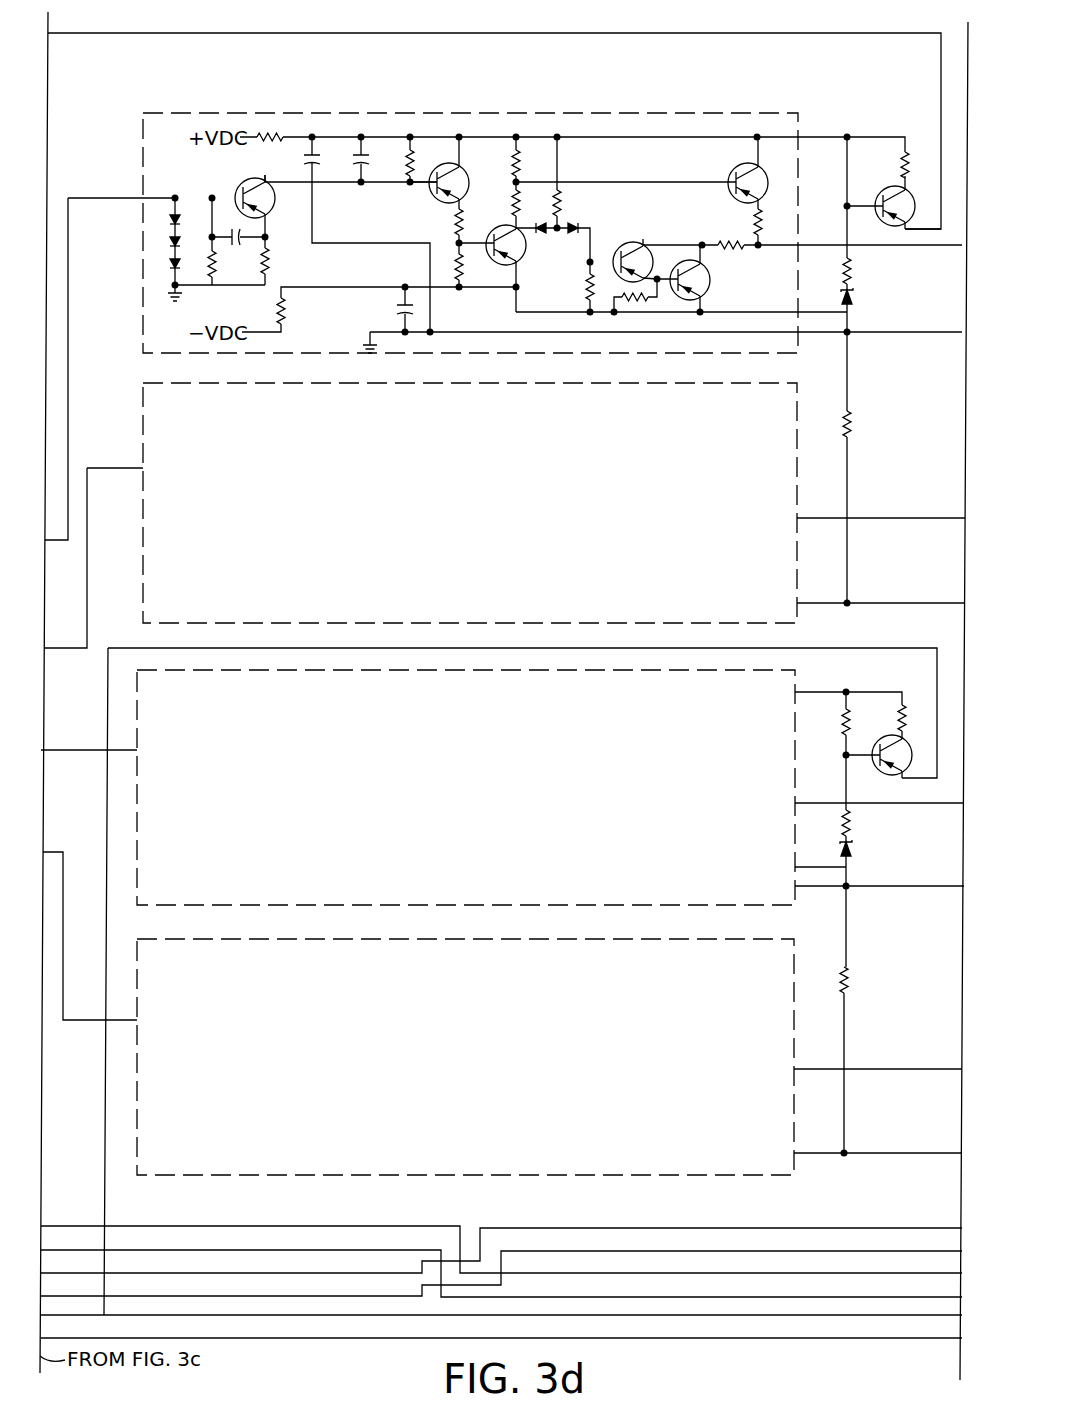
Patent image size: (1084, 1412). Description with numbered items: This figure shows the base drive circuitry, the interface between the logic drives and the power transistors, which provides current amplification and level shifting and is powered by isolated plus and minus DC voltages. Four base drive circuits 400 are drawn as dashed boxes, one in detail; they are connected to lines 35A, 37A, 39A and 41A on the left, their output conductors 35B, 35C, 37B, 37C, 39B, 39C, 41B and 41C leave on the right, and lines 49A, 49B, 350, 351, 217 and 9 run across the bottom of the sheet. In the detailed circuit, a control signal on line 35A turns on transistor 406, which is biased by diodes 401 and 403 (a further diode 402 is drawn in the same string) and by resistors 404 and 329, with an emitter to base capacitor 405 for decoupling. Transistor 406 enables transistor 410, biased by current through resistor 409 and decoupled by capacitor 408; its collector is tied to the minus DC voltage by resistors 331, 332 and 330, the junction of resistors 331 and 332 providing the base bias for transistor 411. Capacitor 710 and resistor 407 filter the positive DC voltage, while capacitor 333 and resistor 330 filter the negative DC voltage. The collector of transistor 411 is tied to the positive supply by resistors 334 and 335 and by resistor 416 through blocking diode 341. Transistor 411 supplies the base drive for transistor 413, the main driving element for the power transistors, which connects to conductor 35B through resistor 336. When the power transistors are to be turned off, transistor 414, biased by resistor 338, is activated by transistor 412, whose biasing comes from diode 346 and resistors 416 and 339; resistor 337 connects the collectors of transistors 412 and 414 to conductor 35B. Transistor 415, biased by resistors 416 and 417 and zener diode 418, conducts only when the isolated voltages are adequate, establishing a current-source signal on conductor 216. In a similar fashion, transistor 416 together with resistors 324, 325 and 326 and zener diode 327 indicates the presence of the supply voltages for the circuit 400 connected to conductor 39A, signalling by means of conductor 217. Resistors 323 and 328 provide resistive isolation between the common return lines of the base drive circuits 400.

The conductor 216 is at (106, 33).
The line 35A is at (108, 197).
The conductor 35B is at (960, 246).
The output line 35C is at (958, 330).
The conductor 37A is at (114, 467).
The output line 37B is at (950, 517).
The output line 37C is at (948, 602).
The conductor 39A is at (72, 749).
The output line 39B is at (943, 804).
The output line 39C is at (943, 885).
The conductor 41A is at (93, 1019).
The output line 41B is at (936, 1068).
The output line 41C is at (936, 1152).
The bus line 49A is at (55, 1272).
The bus line 49B is at (55, 1294).
The bus line 350 is at (52, 1224).
The bus line 351 is at (52, 1247).
The conductor 217 is at (61, 1306).
The ground line 9 is at (132, 1336).
The base drive circuit 400 is at (143, 340).
The diode 401 is at (170, 222).
The diode 402 is at (170, 244).
The diode 403 is at (170, 266).
The resistor 404 is at (203, 260).
The emitter to base capacitor 405 is at (236, 248).
The transistor 406 is at (238, 186).
The resistor 407 is at (278, 127).
The capacitor 408 is at (370, 160).
The resistor 409 is at (414, 164).
The capacitor 710 is at (304, 158).
The transistor 410 is at (433, 190).
The resistor 331 is at (455, 222).
The resistor 332 is at (465, 268).
The capacitor 333 is at (397, 312).
The resistor 334 is at (510, 160).
The resistor 335 is at (510, 203).
The resistor 336 is at (762, 222).
The resistor 337 is at (735, 240).
The resistor 338 is at (636, 303).
The resistor 339 is at (584, 290).
The blocking diode 341 is at (541, 222).
The diode 346 is at (578, 226).
The transistor 411 is at (527, 250).
The transistor 412 is at (645, 243).
The transistor 413 is at (732, 175).
The transistor 414 is at (711, 283).
The transistor 415 is at (885, 190).
The resistor (also transistor) 416 is at (562, 203).
The resistor 417 is at (852, 270).
The zener diode 418 is at (853, 298).
The resistor 323 is at (852, 424).
The resistor 324 is at (896, 720).
The resistor 325 is at (840, 722).
The resistor 326 is at (840, 823).
The zener diode 327 is at (853, 850).
The resistor 328 is at (850, 980).
The resistor 329 is at (271, 262).
The resistor 330 is at (287, 311).